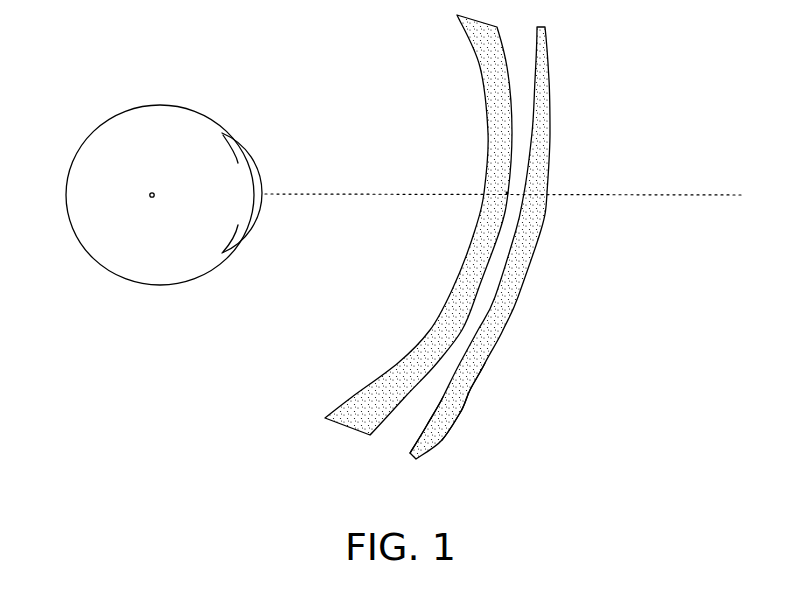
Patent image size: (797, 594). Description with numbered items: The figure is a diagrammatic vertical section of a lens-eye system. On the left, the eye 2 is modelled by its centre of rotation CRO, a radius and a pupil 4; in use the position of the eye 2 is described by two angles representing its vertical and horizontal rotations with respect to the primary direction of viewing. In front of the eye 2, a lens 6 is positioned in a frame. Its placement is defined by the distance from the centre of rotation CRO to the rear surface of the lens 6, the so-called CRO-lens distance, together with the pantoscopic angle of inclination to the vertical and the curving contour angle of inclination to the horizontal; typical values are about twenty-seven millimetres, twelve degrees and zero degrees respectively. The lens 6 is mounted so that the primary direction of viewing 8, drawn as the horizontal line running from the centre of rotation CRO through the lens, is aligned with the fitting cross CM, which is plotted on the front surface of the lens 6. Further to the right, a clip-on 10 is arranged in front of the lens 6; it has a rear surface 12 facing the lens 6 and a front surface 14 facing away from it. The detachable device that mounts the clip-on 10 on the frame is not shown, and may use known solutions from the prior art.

The eye 2 is at (78, 148).
The pupil 4 is at (245, 213).
The lens 6 is at (483, 62).
The primary direction of viewing 8 is at (708, 197).
The clip-on 10 is at (547, 127).
The rear surface 12 is at (420, 437).
The front surface 14 is at (462, 407).
The centre of rotation CRO is at (154, 186).
The fitting cross CM is at (507, 192).